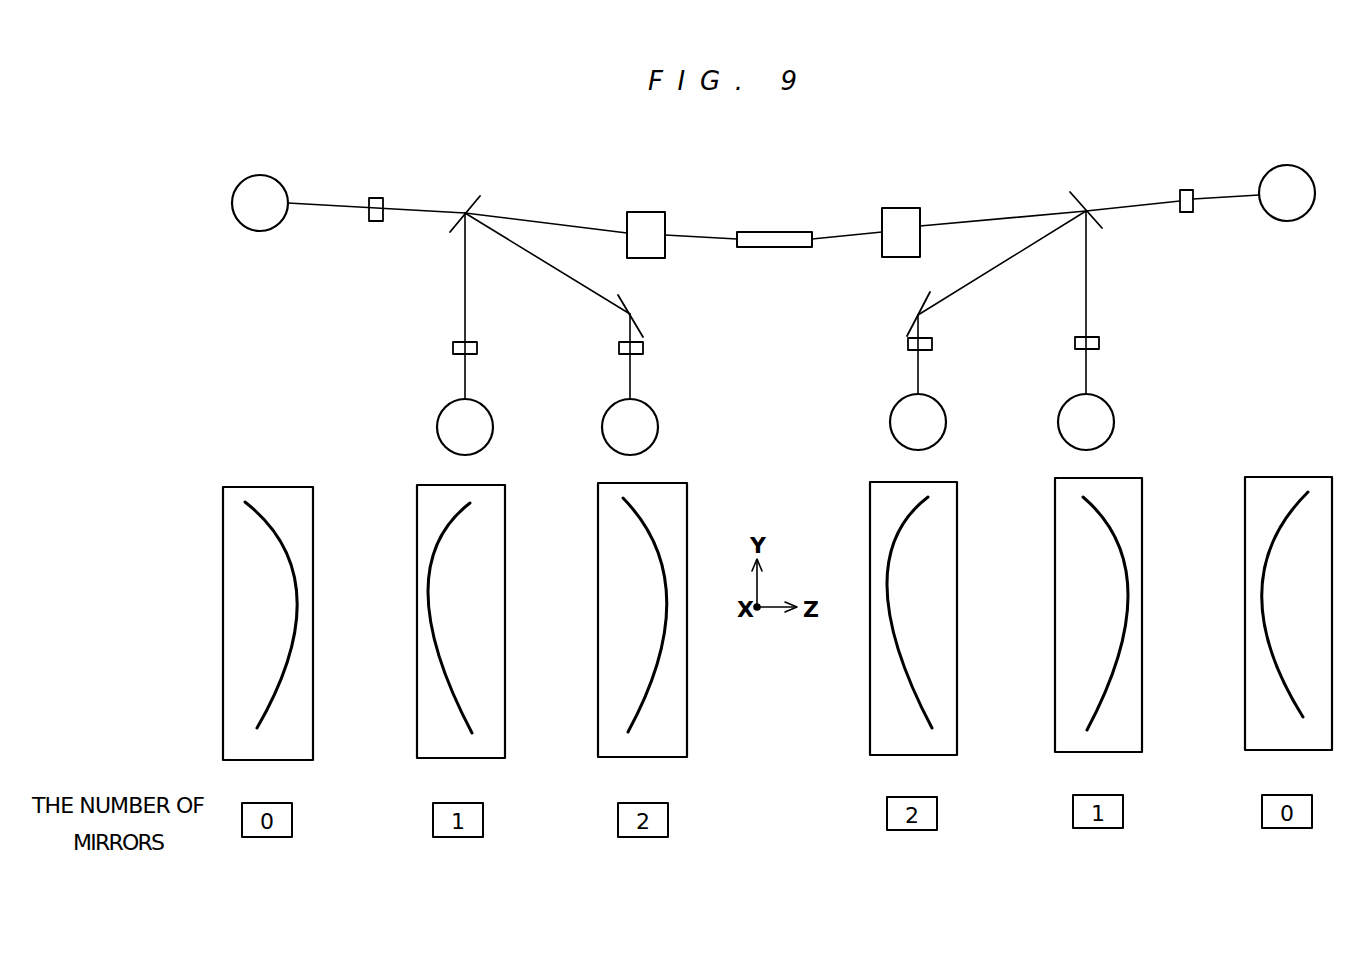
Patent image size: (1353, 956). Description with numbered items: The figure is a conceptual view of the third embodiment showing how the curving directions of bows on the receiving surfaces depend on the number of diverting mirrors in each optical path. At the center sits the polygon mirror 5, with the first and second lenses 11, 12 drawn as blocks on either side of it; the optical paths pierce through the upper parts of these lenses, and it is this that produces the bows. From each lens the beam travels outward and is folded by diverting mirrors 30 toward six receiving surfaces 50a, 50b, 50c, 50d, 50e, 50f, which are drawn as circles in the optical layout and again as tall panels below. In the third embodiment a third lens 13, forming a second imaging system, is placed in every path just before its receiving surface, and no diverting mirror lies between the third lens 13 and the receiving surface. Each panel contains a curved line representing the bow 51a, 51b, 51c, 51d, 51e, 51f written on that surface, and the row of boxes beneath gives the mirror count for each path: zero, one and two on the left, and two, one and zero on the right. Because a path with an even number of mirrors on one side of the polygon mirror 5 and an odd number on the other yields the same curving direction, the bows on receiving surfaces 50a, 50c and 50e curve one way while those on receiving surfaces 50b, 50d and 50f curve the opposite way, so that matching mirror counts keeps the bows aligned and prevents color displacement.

The polygon mirror 5 is at (770, 232).
The first lens 11 is at (786, 203).
The second lens 12 is at (650, 212).
The third lens 13 is at (374, 222).
The diverting mirror 30 is at (470, 204).
The receiving surface 50a is at (302, 467).
The receiving surface 50b is at (462, 562).
The receiving surface 50c is at (672, 564).
The receiving surface 50d is at (916, 560).
The receiving surface 50e is at (1130, 564).
The receiving surface 50f is at (1260, 446).
The bow 51a is at (295, 592).
The bow 51b is at (437, 658).
The bow 51c is at (658, 666).
The bow 51d is at (898, 673).
The bow 51e is at (1123, 648).
The bow 51f is at (1263, 574).